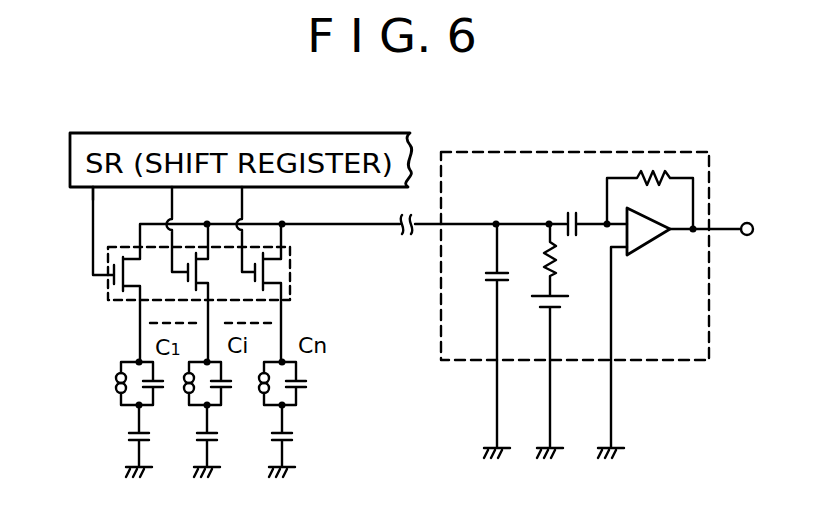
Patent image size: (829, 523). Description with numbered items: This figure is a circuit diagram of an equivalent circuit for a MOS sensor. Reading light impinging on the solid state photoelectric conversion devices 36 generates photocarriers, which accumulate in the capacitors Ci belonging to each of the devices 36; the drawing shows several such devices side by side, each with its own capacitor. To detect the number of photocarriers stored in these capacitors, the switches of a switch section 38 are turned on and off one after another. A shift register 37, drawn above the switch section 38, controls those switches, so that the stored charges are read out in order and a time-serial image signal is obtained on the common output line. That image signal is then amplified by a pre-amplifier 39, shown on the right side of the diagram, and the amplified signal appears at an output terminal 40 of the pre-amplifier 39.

The solid state photoelectric conversion device 36 is at (113, 412).
The shift register 37 is at (79, 198).
The switch section 38 is at (108, 299).
The pre-amplifier 39 is at (660, 360).
The output terminal 40 is at (753, 229).